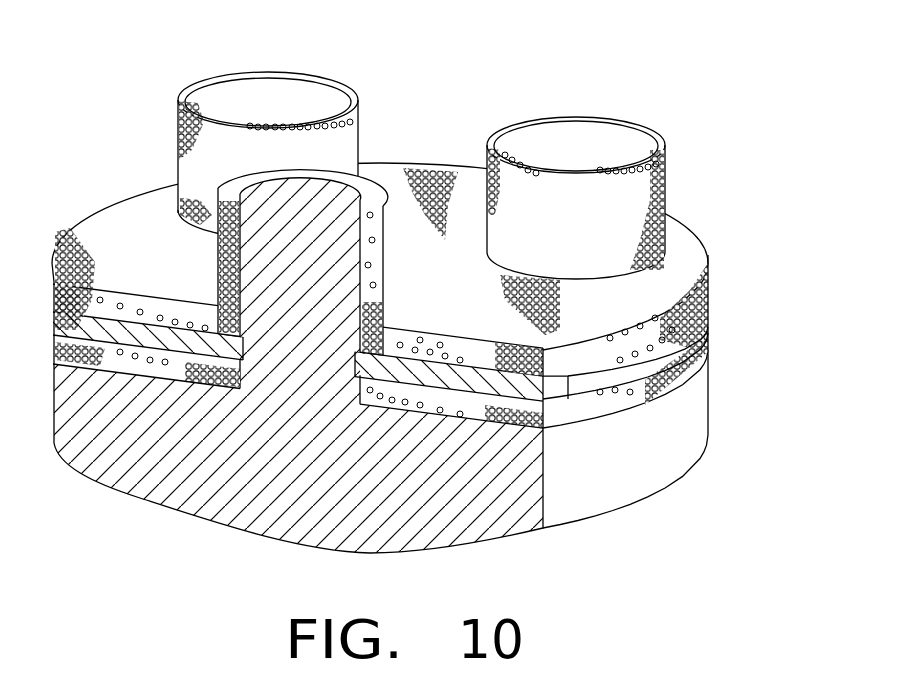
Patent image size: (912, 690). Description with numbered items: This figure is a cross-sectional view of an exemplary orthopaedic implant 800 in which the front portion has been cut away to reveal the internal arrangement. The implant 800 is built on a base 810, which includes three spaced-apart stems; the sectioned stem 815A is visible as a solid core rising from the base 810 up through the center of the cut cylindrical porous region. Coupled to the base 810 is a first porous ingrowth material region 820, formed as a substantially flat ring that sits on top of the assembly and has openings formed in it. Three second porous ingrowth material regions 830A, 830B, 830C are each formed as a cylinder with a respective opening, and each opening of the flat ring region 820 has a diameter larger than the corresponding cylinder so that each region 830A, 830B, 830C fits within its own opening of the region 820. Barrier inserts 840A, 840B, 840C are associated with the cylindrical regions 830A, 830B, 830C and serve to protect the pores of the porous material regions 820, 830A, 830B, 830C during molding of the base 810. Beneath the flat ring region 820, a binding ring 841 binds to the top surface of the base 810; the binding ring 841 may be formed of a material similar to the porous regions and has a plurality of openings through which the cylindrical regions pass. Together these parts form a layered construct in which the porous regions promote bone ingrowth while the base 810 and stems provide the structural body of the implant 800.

The implant 800 is at (431, 284).
The base 810 is at (710, 403).
The stem 815A is at (272, 265).
The first porous ingrowth material region 820 is at (710, 282).
The binding ring 841 is at (710, 338).
The second porous ingrowth material region 830A is at (271, 237).
The second porous ingrowth material region 830B is at (214, 127).
The second porous ingrowth material region 830C is at (541, 163).
The barrier insert 840A is at (358, 166).
The barrier insert 840B is at (262, 90).
The barrier insert 840C is at (576, 130).